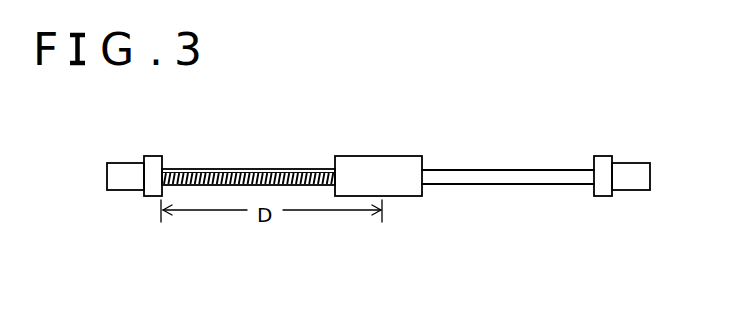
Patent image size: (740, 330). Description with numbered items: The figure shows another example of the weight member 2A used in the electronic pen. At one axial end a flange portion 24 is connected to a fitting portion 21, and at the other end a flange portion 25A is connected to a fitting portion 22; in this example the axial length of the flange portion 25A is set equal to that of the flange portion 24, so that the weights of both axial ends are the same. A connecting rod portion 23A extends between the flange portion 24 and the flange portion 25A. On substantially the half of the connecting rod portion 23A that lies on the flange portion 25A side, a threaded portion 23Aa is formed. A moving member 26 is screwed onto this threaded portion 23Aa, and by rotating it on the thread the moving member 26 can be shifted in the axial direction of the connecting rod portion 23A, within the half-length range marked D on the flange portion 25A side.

The weight member 2A is at (482, 152).
The fitting portion 21 is at (628, 185).
The fitting portion 22 is at (123, 184).
The connecting rod portion 23A is at (497, 180).
The threaded portion 23Aa is at (215, 169).
The flange portion 24 is at (603, 193).
The flange portion 25A is at (153, 190).
The moving member 26 is at (363, 163).